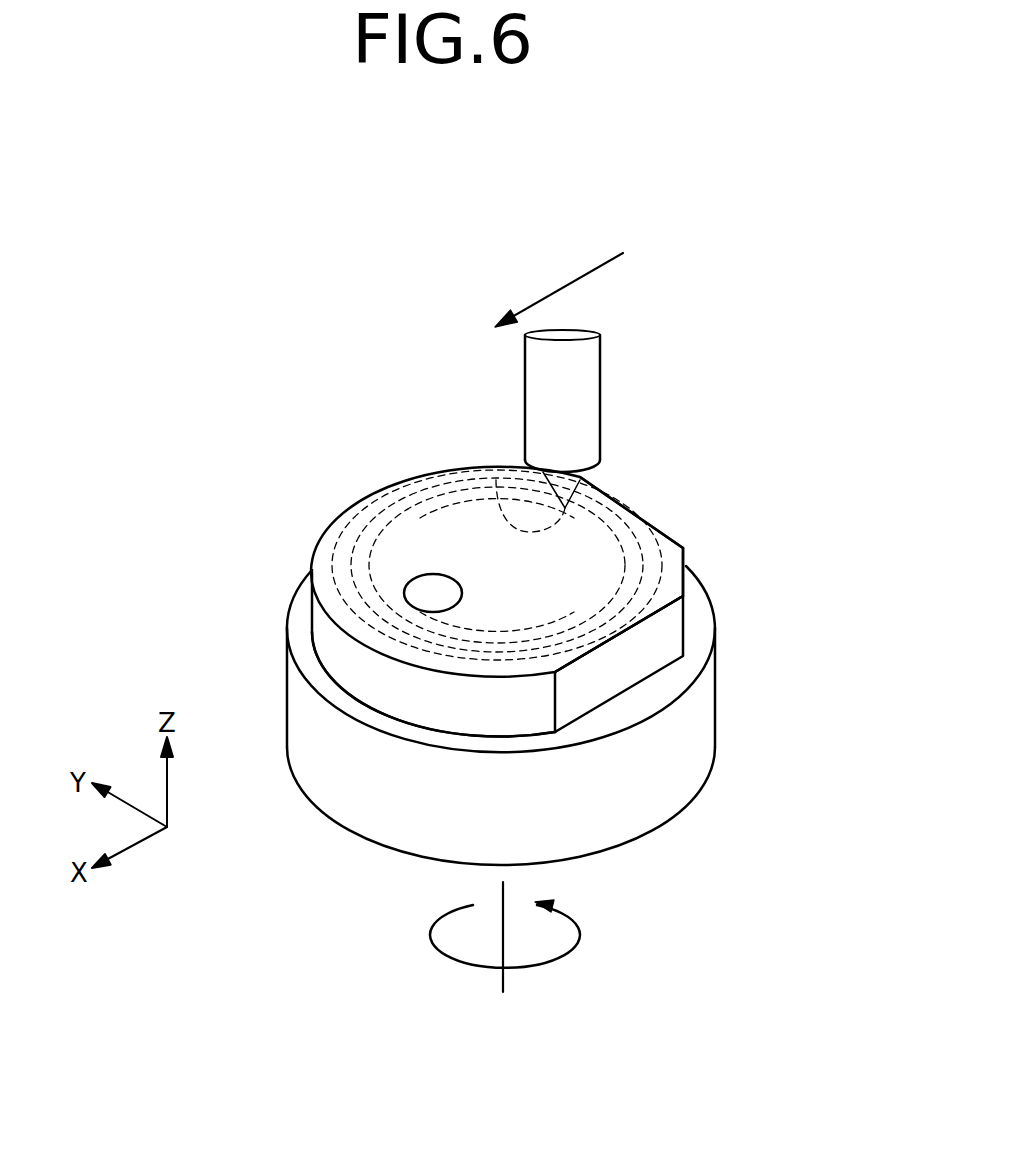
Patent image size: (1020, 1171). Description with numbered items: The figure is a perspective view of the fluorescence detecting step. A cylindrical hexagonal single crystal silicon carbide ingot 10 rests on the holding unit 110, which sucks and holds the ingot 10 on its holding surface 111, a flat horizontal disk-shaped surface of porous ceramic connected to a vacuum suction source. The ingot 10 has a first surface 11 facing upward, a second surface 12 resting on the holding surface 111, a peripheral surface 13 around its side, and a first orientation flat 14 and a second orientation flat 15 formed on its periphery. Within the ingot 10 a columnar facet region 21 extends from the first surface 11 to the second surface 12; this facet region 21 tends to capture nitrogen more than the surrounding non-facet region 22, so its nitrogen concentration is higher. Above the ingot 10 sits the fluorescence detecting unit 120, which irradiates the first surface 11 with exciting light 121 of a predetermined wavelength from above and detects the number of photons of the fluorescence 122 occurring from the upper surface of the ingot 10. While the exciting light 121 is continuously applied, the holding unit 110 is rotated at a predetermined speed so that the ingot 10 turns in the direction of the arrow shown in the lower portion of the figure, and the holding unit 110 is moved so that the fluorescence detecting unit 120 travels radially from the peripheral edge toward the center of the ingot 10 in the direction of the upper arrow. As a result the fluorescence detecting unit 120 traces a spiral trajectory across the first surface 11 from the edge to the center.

The ingot 10 is at (628, 563).
The first surface 11 is at (426, 528).
The second surface 12 is at (322, 665).
The peripheral surface 13 is at (332, 642).
The first orientation flat 14 is at (653, 653).
The second orientation flat 15 is at (650, 516).
The facet region 21 is at (410, 578).
The non-facet region 22 is at (674, 566).
The holding unit 110 is at (541, 709).
The holding surface 111 is at (703, 617).
The fluorescence detecting unit 120 is at (612, 419).
The exciting light 121 is at (567, 508).
The fluorescence 122 is at (496, 480).